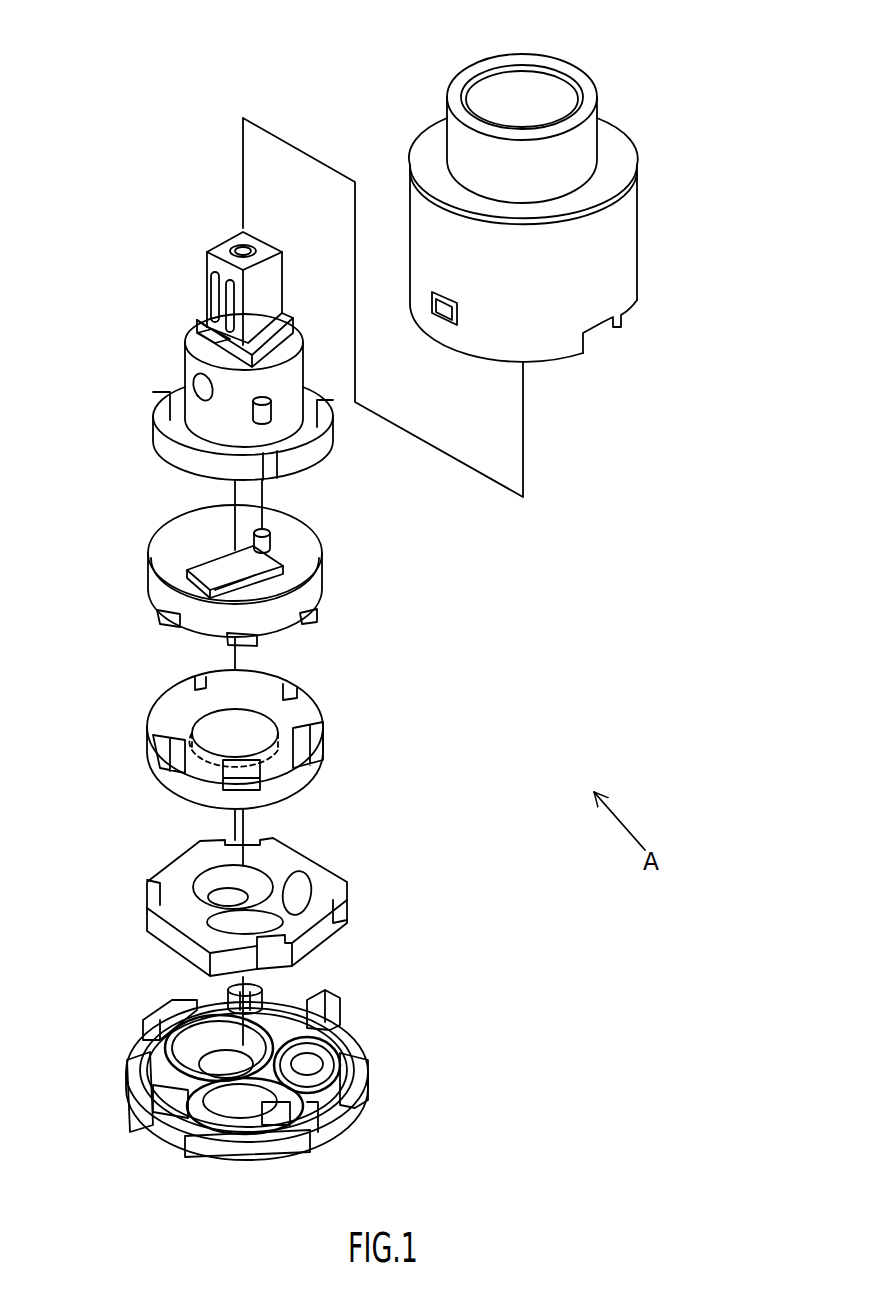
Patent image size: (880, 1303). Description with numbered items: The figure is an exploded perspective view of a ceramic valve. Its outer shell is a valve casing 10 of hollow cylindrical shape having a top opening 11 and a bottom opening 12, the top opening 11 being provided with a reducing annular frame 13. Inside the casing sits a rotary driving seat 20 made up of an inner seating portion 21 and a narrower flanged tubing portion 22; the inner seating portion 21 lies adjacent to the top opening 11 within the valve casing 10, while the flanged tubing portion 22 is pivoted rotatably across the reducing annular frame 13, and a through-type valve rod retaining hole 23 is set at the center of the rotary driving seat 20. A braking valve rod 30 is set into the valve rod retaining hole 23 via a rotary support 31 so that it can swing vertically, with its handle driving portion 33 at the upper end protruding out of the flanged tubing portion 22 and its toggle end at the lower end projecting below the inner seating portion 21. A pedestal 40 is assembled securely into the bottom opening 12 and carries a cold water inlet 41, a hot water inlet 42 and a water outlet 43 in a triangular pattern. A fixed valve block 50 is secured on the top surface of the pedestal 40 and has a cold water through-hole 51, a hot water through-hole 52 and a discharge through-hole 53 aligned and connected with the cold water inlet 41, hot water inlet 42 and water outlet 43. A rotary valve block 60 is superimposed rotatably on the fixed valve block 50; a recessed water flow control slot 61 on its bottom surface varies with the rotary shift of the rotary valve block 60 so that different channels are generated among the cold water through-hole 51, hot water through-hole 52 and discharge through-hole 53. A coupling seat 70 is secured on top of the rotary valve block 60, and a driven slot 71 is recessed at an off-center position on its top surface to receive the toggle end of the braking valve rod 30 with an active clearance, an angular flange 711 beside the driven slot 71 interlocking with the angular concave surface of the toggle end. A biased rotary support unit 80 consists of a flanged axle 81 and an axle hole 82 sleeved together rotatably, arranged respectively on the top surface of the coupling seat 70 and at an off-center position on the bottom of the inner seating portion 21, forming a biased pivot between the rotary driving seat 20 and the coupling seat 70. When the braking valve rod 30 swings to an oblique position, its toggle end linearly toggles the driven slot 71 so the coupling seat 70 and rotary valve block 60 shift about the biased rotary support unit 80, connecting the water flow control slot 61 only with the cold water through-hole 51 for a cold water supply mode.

The valve casing 10 is at (584, 198).
The top opening 11 is at (556, 98).
The bottom opening 12 is at (598, 335).
The reducing annular frame 13 is at (598, 135).
The rotary driving seat 20 is at (182, 389).
The inner seating portion 21 is at (163, 445).
The flanged tubing portion 22 is at (190, 363).
The valve rod retaining hole 23 is at (197, 337).
The braking valve rod 30 is at (228, 347).
The rotary support 31 is at (185, 462).
The handle driving portion 33 is at (272, 282).
The pedestal 40 is at (269, 1066).
The cold water inlet 41 is at (157, 1120).
The hot water inlet 42 is at (310, 1053).
The water outlet 43 is at (217, 1062).
The fixed valve block 50 is at (255, 910).
The cold water through-hole 51 is at (240, 925).
The hot water through-hole 52 is at (318, 896).
The discharge through-hole 53 is at (228, 897).
The rotary valve block 60 is at (252, 755).
The water flow control slot 61 is at (152, 703).
The coupling seat 70 is at (228, 587).
The driven slot 71 is at (297, 573).
The angular flange 711 is at (295, 540).
The biased rotary support unit 80 is at (326, 475).
The flanged axle 81 is at (270, 530).
The axle hole 82 is at (272, 414).